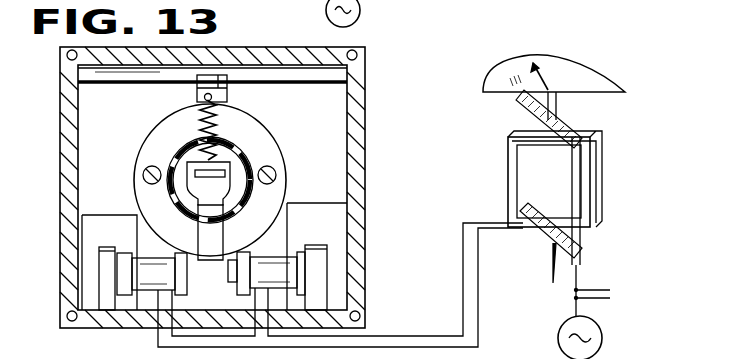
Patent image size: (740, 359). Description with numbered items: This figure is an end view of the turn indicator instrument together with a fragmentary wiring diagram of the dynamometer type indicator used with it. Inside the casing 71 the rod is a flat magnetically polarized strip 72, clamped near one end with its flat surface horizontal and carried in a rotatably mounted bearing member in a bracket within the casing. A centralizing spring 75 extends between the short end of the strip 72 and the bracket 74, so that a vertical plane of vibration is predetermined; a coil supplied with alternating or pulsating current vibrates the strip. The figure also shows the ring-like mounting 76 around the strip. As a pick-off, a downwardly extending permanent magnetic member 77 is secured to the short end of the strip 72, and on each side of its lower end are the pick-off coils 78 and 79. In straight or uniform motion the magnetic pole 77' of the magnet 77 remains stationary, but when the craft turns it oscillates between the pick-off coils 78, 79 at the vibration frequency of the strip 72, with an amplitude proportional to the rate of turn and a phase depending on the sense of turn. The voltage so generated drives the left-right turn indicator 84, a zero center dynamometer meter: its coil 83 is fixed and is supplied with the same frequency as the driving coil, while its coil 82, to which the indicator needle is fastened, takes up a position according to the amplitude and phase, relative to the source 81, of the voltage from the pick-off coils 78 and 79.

The casing 71 is at (366, 98).
The flat magnetically polarized strip 72 is at (224, 164).
The bracket 74 is at (228, 88).
The centralizing spring 75 is at (197, 110).
The ring frame 76 is at (155, 128).
The permanent magnetic member 77 is at (226, 232).
The magnetic pole 77' is at (319, 287).
The pick-off coil 78 is at (157, 257).
The pick-off coil 79 is at (262, 254).
The source 81 is at (360, 12).
The coil 82 is at (603, 204).
The coil 83 is at (587, 253).
The left-right turn indicator 84 is at (610, 87).